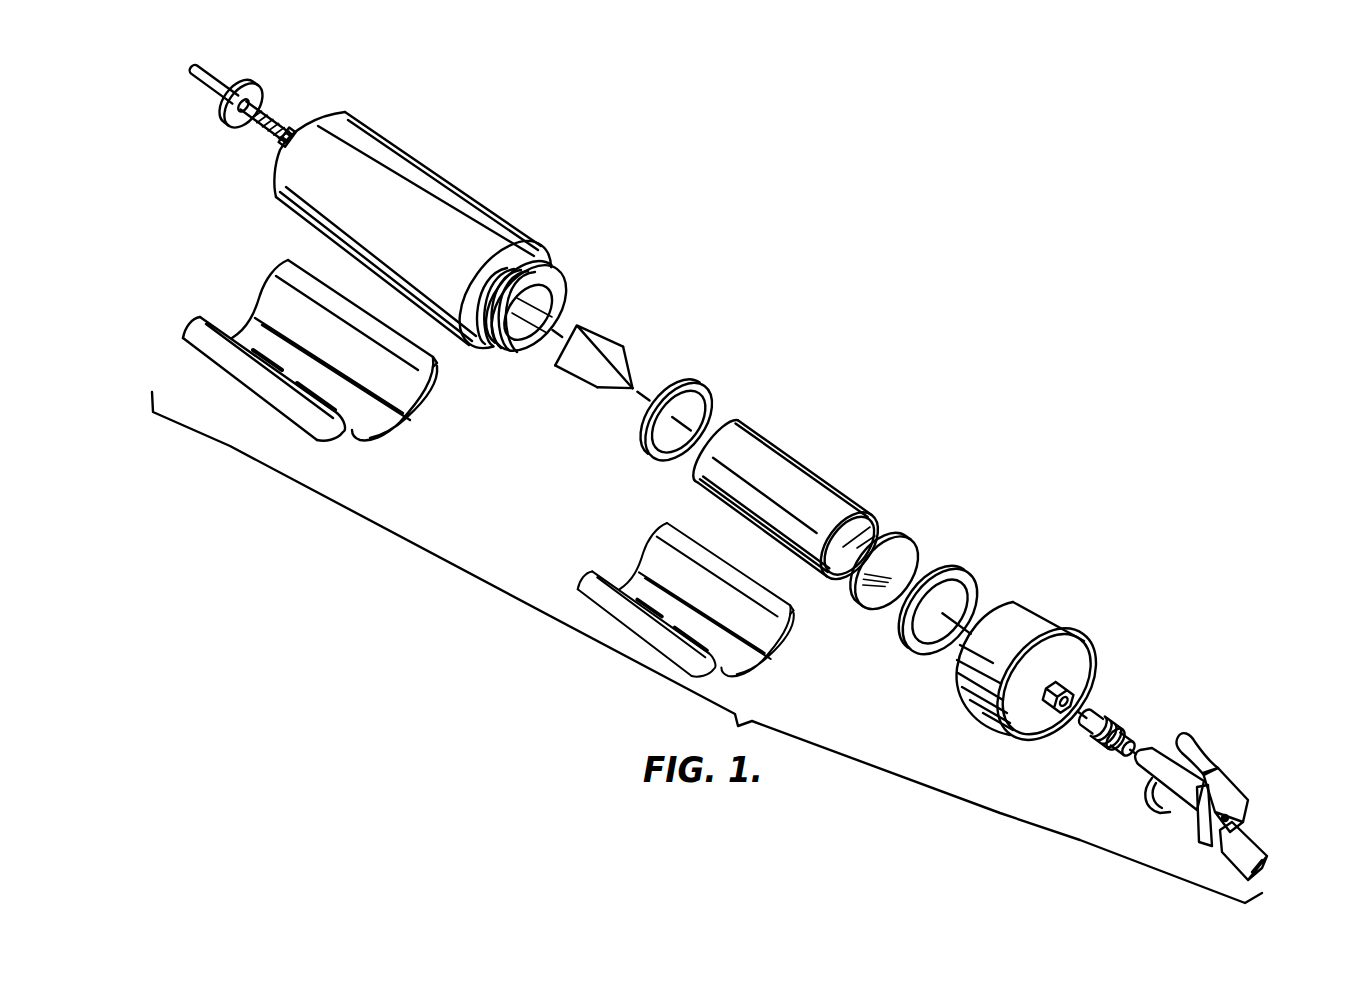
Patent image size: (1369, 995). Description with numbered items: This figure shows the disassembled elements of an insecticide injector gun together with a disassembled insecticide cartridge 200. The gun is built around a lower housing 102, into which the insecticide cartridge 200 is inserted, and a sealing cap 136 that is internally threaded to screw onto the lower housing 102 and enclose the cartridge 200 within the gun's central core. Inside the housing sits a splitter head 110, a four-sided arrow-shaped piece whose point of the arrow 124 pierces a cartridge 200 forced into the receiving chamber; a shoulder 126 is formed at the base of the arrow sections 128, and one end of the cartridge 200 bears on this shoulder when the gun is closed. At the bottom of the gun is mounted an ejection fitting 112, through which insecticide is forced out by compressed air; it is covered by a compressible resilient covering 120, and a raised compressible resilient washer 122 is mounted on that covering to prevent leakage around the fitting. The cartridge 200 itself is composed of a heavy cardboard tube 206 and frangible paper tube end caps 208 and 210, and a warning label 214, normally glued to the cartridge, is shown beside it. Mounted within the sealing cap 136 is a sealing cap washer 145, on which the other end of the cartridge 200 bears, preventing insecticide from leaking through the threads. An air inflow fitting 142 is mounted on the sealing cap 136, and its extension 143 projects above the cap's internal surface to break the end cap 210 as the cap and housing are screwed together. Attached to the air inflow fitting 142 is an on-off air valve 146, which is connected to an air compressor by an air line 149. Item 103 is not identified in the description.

The lower housing 102 is at (407, 185).
The cradle half shell 103 is at (380, 395).
The splitter head 110 is at (603, 330).
The ejection fitting 112 is at (280, 122).
The compressible resilient covering 120 is at (222, 84).
The compressible resilient washer 122 is at (241, 121).
The point of the arrow 124 is at (638, 380).
The shoulder 126 is at (570, 377).
The arrow sections 128 is at (612, 385).
The sealing cap 136 is at (1030, 608).
The air inflow fitting 142 is at (1117, 722).
The extension 143 is at (1072, 684).
The sealing cap washer 145 is at (976, 580).
The on-off air valve 146 is at (1220, 780).
The air line 149 is at (1263, 860).
The insecticide cartridge 200 is at (767, 452).
The heavy cardboard tube 206 is at (856, 510).
The tube end cap 208 is at (912, 552).
The tube end cap 210 is at (700, 390).
The warning label 214 is at (650, 568).